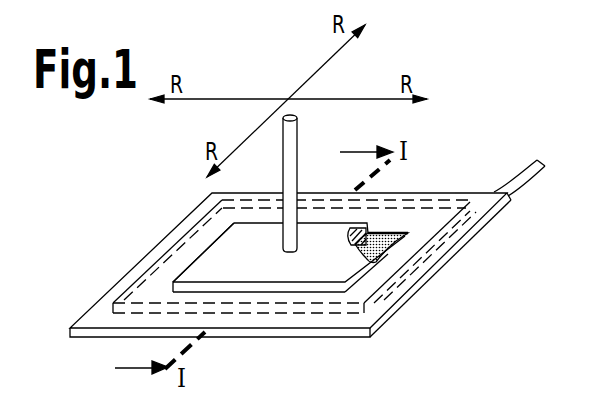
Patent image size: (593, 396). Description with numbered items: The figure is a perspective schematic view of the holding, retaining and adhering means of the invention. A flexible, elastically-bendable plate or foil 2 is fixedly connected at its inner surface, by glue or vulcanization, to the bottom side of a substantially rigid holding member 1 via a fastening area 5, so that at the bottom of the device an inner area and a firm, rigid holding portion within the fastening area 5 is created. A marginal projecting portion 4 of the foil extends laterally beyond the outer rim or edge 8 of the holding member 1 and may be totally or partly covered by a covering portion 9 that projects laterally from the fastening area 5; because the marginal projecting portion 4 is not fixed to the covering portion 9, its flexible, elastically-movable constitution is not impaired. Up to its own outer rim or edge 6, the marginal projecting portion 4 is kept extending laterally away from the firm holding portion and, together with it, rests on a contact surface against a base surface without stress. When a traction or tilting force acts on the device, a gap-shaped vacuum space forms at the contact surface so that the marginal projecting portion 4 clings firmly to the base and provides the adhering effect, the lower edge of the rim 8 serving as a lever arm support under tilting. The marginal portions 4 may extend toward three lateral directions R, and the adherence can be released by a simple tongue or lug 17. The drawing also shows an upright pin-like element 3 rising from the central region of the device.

The holding member 1 is at (192, 264).
The plate or foil 2 is at (352, 338).
The contact pin 3 is at (283, 170).
The marginal projecting portion 4 is at (96, 314).
The fastening area 5 is at (392, 243).
The outer rim or edge 6 is at (233, 332).
The outer rim or edge 8 is at (296, 288).
The covering portion 9 is at (462, 197).
The tongue or lug 17 is at (518, 178).